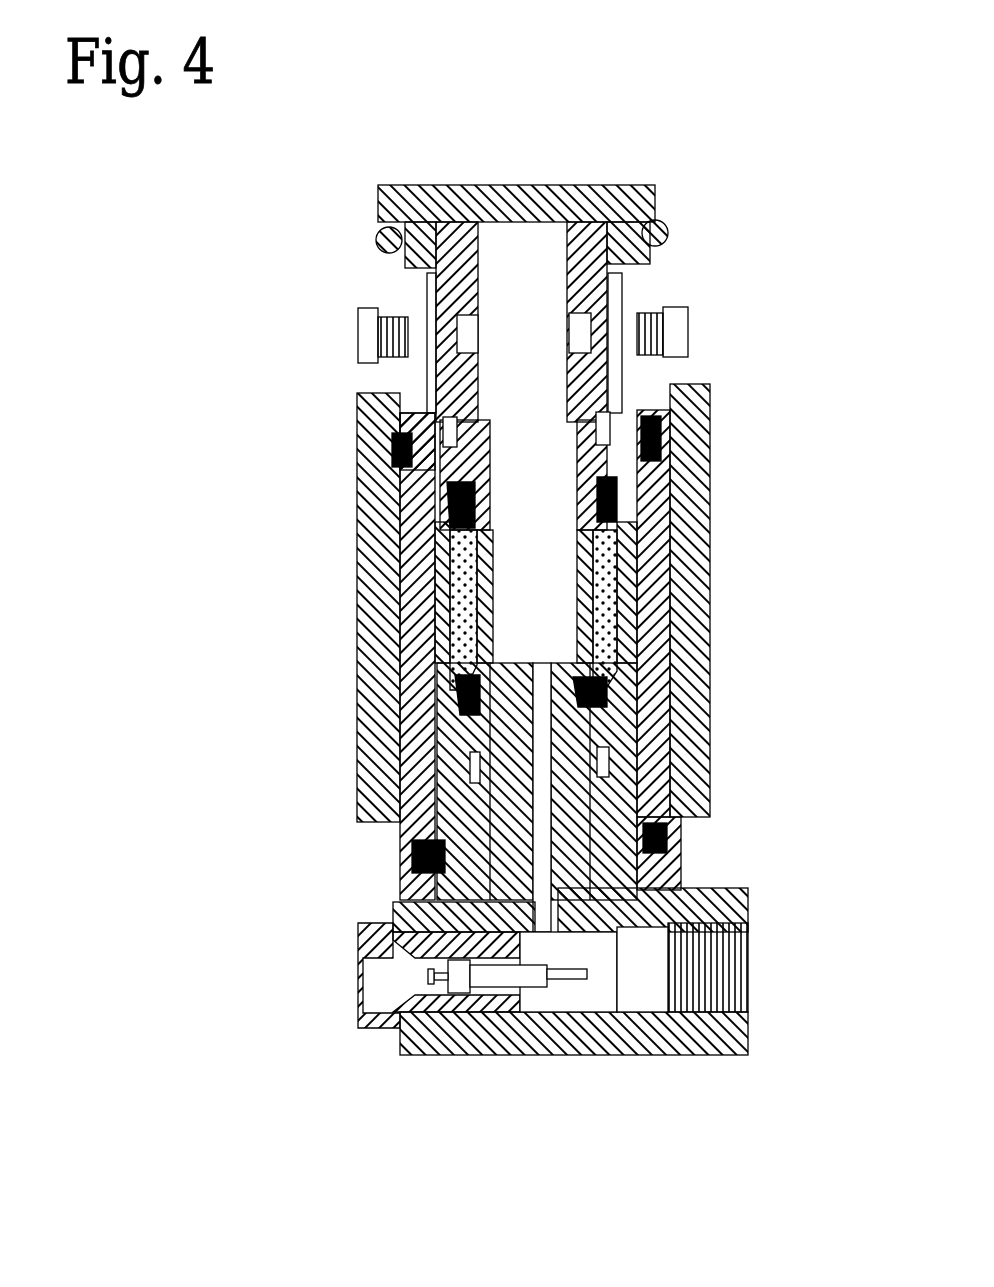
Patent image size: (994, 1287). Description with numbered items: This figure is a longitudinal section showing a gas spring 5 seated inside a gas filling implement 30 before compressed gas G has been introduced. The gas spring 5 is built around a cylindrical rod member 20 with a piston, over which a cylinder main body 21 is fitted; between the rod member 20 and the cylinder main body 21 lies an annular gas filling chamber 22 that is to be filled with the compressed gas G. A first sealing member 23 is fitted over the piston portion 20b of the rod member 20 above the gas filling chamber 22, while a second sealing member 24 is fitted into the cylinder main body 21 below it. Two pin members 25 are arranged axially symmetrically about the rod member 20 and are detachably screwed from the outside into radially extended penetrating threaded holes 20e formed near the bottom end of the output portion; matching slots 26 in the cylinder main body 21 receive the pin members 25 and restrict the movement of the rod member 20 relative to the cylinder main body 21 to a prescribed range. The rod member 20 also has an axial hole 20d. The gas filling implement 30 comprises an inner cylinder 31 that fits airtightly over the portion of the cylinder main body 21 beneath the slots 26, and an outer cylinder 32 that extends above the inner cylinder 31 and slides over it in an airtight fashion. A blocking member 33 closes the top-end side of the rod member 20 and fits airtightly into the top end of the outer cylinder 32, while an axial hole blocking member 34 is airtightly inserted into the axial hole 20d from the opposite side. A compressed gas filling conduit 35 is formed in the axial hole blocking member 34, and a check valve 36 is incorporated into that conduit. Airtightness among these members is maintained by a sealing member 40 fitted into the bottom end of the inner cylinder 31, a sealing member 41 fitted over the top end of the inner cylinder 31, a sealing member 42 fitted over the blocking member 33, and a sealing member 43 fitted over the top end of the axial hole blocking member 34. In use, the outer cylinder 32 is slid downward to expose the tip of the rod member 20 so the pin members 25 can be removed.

The gas spring 5 is at (422, 554).
The compressed gas G is at (455, 600).
The rod member 20 is at (380, 628).
The piston portion 20b is at (422, 392).
The axial hole 20d is at (418, 850).
The threaded holes 20e is at (468, 342).
The cylinder main body 21 is at (405, 815).
The gas filling chamber 22 is at (376, 690).
The first sealing member 23 is at (420, 552).
The second sealing member 24 is at (376, 760).
The pin members 25 is at (360, 322).
The slots 26 is at (428, 388).
The gas filling implement 30 is at (748, 618).
The inner cylinder 31 is at (667, 669).
The outer cylinder 32 is at (703, 410).
The blocking member 33 is at (607, 183).
The axial hole blocking member 34 is at (665, 1033).
The compressed gas filling conduit 35 is at (560, 880).
The check valve 36 is at (458, 990).
The sealing member 40 is at (700, 805).
The sealing member 41 is at (648, 430).
The sealing member 42 is at (667, 231).
The sealing member 43 is at (596, 668).